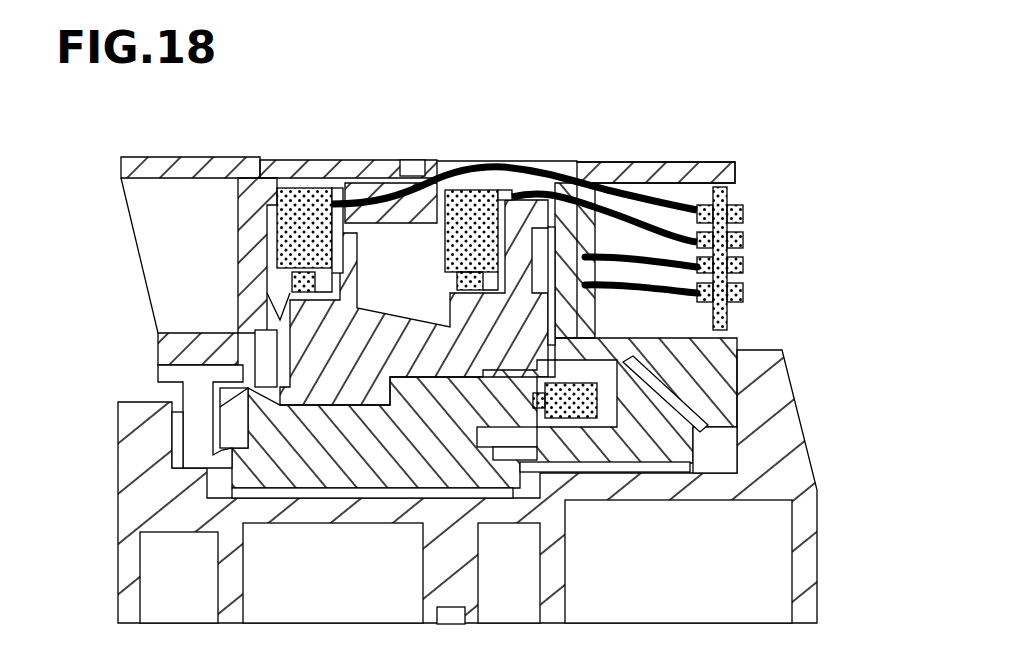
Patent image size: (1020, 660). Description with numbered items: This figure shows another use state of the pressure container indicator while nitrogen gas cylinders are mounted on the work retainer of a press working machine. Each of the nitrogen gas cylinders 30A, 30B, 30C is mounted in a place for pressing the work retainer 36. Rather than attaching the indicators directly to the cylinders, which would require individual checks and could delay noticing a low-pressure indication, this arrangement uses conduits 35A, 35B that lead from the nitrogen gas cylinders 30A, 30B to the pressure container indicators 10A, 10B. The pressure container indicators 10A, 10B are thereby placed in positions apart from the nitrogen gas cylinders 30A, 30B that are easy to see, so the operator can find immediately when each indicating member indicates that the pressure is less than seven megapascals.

The nitrogen gas cylinder 30A is at (302, 188).
The nitrogen gas cylinder 30B is at (455, 256).
The nitrogen gas cylinder 30C is at (577, 412).
The conduit 35A is at (468, 168).
The conduit 35B is at (557, 265).
The work retainer 36 is at (283, 353).
The pressure container indicator 10A is at (743, 206).
The pressure container indicator 10B is at (743, 234).